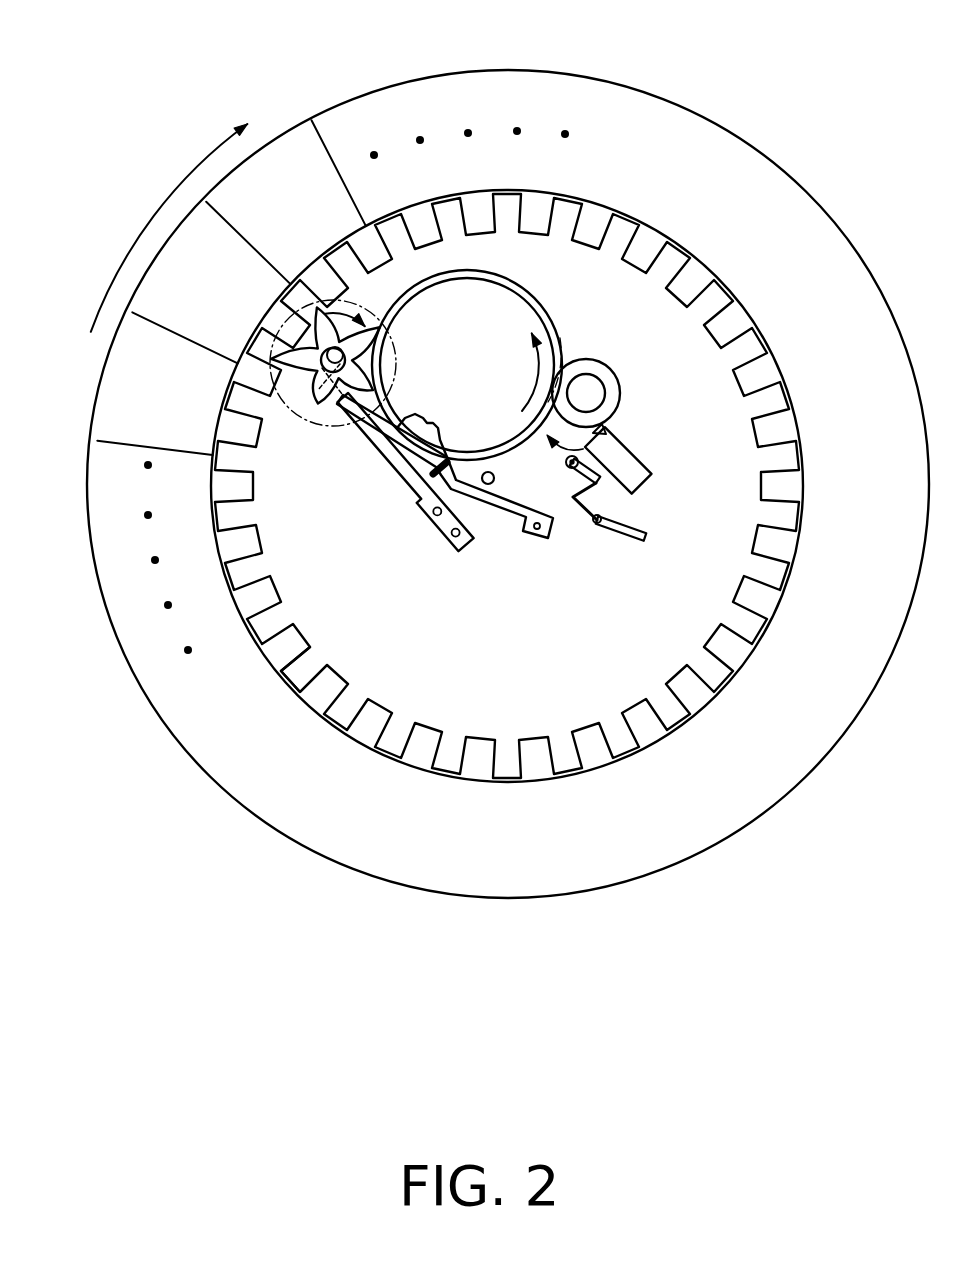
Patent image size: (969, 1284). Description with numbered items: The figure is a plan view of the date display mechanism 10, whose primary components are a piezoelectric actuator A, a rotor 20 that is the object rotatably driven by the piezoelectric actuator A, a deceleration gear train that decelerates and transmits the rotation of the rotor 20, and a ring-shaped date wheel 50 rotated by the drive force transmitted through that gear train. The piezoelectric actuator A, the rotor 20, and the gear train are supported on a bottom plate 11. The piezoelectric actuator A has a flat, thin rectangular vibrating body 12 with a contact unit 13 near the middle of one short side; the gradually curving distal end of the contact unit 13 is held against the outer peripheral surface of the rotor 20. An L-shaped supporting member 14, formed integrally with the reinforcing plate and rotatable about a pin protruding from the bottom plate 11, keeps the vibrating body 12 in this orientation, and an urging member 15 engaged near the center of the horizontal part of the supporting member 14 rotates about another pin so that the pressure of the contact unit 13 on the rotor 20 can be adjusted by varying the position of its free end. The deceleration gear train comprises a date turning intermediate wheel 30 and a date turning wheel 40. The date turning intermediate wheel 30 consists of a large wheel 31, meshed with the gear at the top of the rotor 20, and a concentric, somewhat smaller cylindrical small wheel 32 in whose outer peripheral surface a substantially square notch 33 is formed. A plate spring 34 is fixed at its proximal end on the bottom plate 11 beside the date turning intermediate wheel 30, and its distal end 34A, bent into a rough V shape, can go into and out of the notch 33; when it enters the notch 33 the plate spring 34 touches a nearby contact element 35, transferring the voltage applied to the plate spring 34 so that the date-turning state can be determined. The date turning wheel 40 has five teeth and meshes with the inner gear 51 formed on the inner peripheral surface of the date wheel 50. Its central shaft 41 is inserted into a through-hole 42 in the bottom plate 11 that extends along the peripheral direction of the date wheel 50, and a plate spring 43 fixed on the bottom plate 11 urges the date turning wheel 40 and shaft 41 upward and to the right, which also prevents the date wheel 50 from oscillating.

The date display mechanism 10 is at (724, 108).
The bottom plate 11 is at (300, 555).
The vibrating body 12 is at (631, 459).
The contact unit 13 is at (603, 428).
The supporting member 14 is at (606, 490).
The urging member 15 is at (620, 533).
The piezoelectric actuator A is at (656, 516).
The rotor 20 is at (609, 374).
The date turning intermediate wheel 30 is at (572, 327).
The large wheel 31 is at (561, 343).
The small wheel 32 is at (522, 287).
The notch 33 is at (422, 416).
The plate spring 34 is at (445, 467).
The distal end 34A is at (452, 457).
The contact element 35 is at (497, 478).
The date turning wheel 40 is at (333, 414).
The shaft 41 is at (333, 392).
The through-hole 42 is at (352, 380).
The plate spring 43 is at (418, 488).
The date wheel 50 is at (100, 490).
The inner gear 51 is at (320, 675).